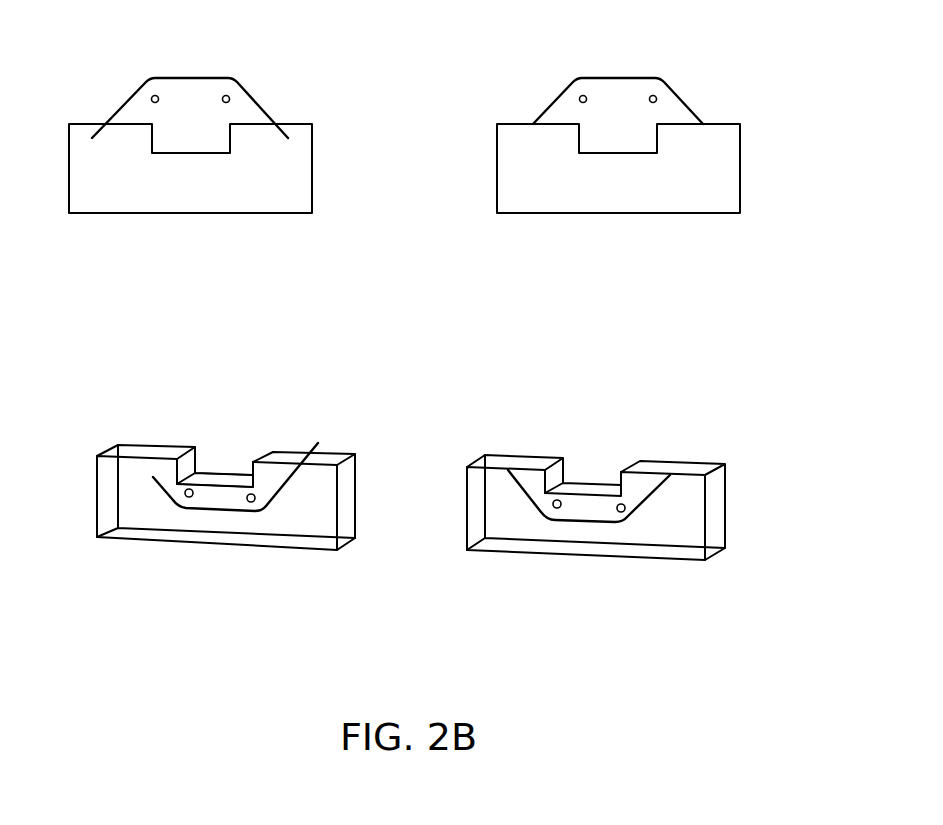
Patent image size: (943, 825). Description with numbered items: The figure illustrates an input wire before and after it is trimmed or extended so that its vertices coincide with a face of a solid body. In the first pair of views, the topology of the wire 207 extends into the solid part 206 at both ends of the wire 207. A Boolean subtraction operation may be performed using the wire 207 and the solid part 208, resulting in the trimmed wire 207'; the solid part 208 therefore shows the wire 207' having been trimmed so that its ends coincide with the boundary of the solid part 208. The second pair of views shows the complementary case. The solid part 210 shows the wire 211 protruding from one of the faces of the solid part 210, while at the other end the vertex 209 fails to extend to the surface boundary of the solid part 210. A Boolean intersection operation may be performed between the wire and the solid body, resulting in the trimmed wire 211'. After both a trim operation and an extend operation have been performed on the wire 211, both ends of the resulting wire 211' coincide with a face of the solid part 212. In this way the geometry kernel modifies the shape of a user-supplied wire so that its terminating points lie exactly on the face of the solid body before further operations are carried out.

The solid part 206 is at (212, 234).
The wire 207 is at (236, 79).
The trimmed wire 207' is at (675, 73).
The solid part 208 is at (647, 238).
The vertex 209 is at (120, 462).
The solid part 210 is at (223, 574).
The wire 211 is at (266, 431).
The trimmed wire 211' is at (680, 496).
The solid part 212 is at (600, 600).